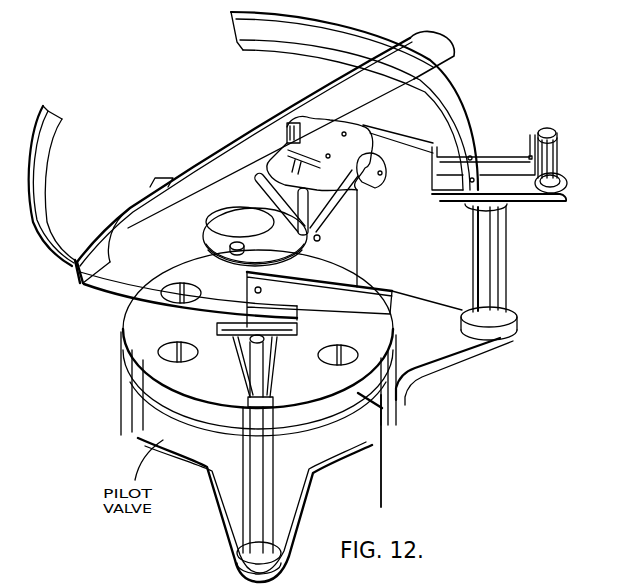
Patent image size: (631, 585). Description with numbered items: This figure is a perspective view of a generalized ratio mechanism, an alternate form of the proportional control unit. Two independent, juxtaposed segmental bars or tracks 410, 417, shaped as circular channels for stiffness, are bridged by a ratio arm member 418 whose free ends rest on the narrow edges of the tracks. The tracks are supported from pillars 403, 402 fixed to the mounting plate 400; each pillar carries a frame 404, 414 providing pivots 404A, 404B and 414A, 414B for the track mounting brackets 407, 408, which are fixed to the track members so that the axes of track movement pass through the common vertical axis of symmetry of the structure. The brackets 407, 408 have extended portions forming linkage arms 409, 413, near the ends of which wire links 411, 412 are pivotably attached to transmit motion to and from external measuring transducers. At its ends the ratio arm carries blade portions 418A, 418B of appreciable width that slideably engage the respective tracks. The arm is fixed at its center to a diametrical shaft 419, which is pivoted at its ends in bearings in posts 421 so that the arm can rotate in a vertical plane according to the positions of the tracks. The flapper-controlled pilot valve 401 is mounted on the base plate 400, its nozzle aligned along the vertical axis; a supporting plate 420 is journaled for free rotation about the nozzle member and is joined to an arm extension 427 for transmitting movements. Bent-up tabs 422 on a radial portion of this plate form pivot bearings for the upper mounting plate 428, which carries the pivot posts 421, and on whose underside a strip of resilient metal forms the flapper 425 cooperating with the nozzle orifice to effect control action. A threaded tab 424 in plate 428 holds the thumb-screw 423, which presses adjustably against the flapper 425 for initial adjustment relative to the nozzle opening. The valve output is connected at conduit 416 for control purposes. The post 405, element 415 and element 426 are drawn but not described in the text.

The mounting plate 400 is at (445, 360).
The pilot valve 401 is at (130, 402).
The pillar 402 is at (253, 525).
The pillar 403 is at (506, 265).
The frame 404 is at (527, 195).
The pivot 404A is at (383, 175).
The pivot 404B is at (557, 158).
The post 405 is at (557, 140).
The track mounting bracket 407 is at (507, 166).
The track mounting bracket 408 is at (237, 330).
The linkage arm 409 is at (402, 140).
The segmental track 410 is at (462, 99).
The wire link 411 is at (358, 248).
The wire link 412 is at (381, 460).
The linkage arm 413 is at (330, 277).
The frame 414 is at (280, 333).
The pivot 414A is at (262, 290).
The pivot 414B is at (260, 377).
The pin 415 is at (260, 372).
The conduit 416 is at (388, 411).
The segmental track 417 is at (103, 287).
The ratio arm member 418 is at (229, 152).
The blade portion 418A is at (452, 51).
The blade portion 418B is at (67, 263).
The diametrical shaft 419 is at (263, 167).
The supporting plate 420 is at (333, 197).
The pivot post 421 is at (315, 232).
The bent-up tab 422 is at (377, 188).
The thumb-screw 423 is at (300, 143).
The threaded tab 424 is at (302, 167).
The flapper 425 is at (240, 226).
The disc 426 is at (220, 215).
The arm extension 427 is at (157, 210).
The upper mounting plate 428 is at (373, 135).